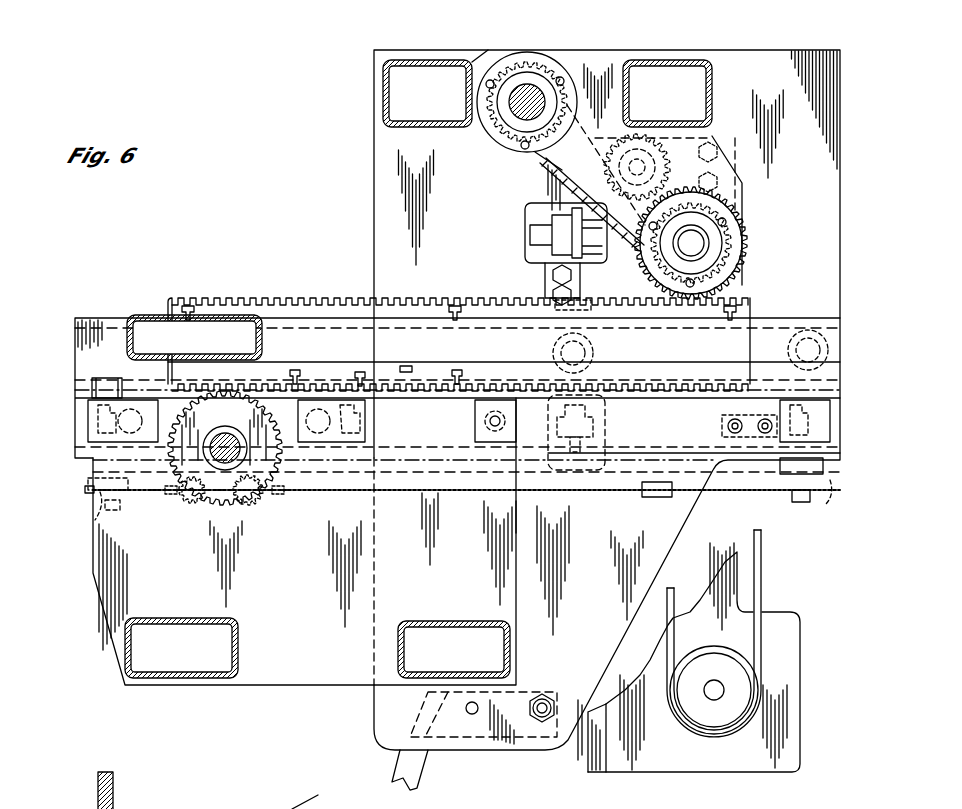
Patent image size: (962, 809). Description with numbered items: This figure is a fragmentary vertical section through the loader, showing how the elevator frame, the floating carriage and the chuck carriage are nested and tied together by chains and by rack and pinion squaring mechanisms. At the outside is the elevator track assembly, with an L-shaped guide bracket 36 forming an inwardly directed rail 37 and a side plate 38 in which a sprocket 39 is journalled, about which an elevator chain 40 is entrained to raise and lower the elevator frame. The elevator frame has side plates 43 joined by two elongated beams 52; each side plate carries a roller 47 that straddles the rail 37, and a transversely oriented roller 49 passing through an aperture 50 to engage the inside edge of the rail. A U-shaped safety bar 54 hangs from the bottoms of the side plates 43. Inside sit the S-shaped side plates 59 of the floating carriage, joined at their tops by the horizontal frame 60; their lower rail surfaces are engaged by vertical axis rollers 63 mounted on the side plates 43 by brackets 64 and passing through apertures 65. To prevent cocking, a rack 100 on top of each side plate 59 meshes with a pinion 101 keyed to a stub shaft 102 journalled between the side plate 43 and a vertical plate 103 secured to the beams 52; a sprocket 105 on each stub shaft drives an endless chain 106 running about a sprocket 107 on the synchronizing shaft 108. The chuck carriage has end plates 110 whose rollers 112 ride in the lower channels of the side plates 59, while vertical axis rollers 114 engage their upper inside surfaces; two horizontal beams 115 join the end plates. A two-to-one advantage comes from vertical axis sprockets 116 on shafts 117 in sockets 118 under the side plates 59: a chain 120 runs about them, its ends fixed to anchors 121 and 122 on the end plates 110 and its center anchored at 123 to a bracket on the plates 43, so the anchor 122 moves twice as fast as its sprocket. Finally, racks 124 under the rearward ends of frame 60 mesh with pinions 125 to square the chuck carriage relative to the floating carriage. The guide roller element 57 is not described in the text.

The guide bracket 36 is at (317, 791).
The rail 37 is at (590, 755).
The side plate 38 is at (662, 760).
The sprocket 39 is at (740, 693).
The elevator chain 40 is at (762, 572).
The side plate 43 is at (374, 235).
The roller 47 is at (218, 803).
The transversely oriented roller 49 is at (592, 252).
The aperture 50 is at (525, 222).
The beam 52 is at (432, 60).
The safety bar 54 is at (425, 772).
The guide roller 57 is at (553, 353).
The side plate 59 is at (78, 380).
The horizontal frame 60 is at (140, 315).
The vertical axis roller 63 is at (578, 472).
The bracket 64 is at (728, 425).
The aperture 65 is at (605, 425).
The rack 100 is at (278, 300).
The pinion 101 is at (742, 262).
The stub shaft 102 is at (702, 238).
The vertical plate 103 is at (600, 72).
The sprocket 105 is at (735, 245).
The endless chain 106 is at (552, 185).
The sprocket 107 is at (520, 66).
The synchronizing shaft 108 is at (534, 90).
The end plate 110 is at (331, 541).
The roller 112 is at (88, 418).
The vertical axis roller 114 is at (103, 378).
The horizontal beam 115 is at (232, 619).
The vertical axis sprocket 116 is at (88, 492).
The shaft 117 is at (95, 515).
The socket 118 is at (88, 483).
The chain 120 is at (280, 482).
The anchor 121 is at (195, 505).
The anchor 122 is at (248, 505).
The chain center anchor 123 is at (655, 498).
The rack 124 is at (415, 375).
The pinion 125 is at (274, 458).